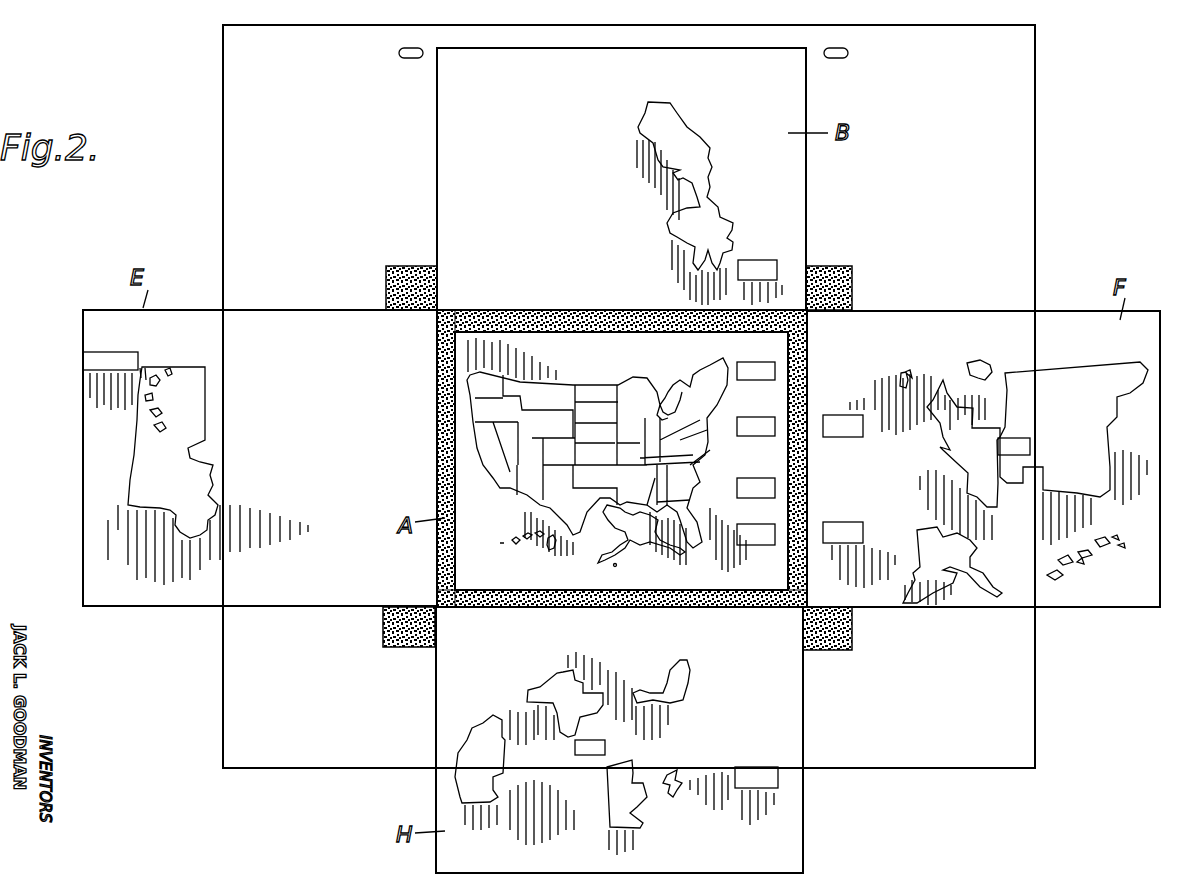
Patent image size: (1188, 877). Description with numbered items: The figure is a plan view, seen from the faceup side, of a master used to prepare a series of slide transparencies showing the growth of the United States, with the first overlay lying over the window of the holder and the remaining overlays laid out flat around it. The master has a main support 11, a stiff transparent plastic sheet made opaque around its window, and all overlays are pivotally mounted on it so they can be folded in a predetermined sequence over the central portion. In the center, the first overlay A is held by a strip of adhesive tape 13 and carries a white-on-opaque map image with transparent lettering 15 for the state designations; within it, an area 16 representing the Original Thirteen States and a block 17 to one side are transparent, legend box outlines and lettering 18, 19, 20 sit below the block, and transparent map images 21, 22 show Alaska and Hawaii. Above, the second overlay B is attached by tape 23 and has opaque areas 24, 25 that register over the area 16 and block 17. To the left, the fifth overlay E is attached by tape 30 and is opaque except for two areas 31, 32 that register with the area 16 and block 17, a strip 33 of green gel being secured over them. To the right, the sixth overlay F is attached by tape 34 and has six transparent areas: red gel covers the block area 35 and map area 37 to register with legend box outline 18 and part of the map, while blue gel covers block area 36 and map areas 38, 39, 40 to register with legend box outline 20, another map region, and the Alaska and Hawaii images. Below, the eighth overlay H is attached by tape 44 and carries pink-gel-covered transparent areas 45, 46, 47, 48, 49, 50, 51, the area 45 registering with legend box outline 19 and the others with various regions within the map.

The main support 11 is at (229, 78).
The strip of adhesive tape 13 is at (506, 313).
The transparent lettering 15 is at (595, 383).
The area 16 is at (707, 470).
The block 17 is at (766, 355).
The legend box outline 18 is at (766, 411).
The legend box outline 19 is at (766, 470).
The legend box outline 20 is at (766, 516).
The map image 21 is at (648, 562).
The map image 22 is at (548, 553).
The strip of adhesive tape 23 is at (853, 270).
The opaque area 24 is at (705, 163).
The opaque area 25 is at (758, 270).
The tape 30 is at (443, 374).
The area 31 is at (138, 438).
The area 32 is at (83, 360).
The strip of transparent colored gel 33 is at (130, 362).
The tape 34 is at (808, 390).
The block area 35 is at (843, 437).
The block area 36 is at (842, 526).
The map area 37 is at (945, 385).
The map area 38 is at (1062, 378).
The map area 39 is at (980, 547).
The map area 40 is at (1063, 575).
The tape 44 is at (537, 607).
The transparent area 45 is at (752, 770).
The transparent area 46 is at (483, 722).
The transparent area 47 is at (553, 692).
The transparent area 48 is at (577, 752).
The transparent area 49 is at (690, 669).
The transparent area 50 is at (640, 805).
The transparent area 51 is at (676, 771).